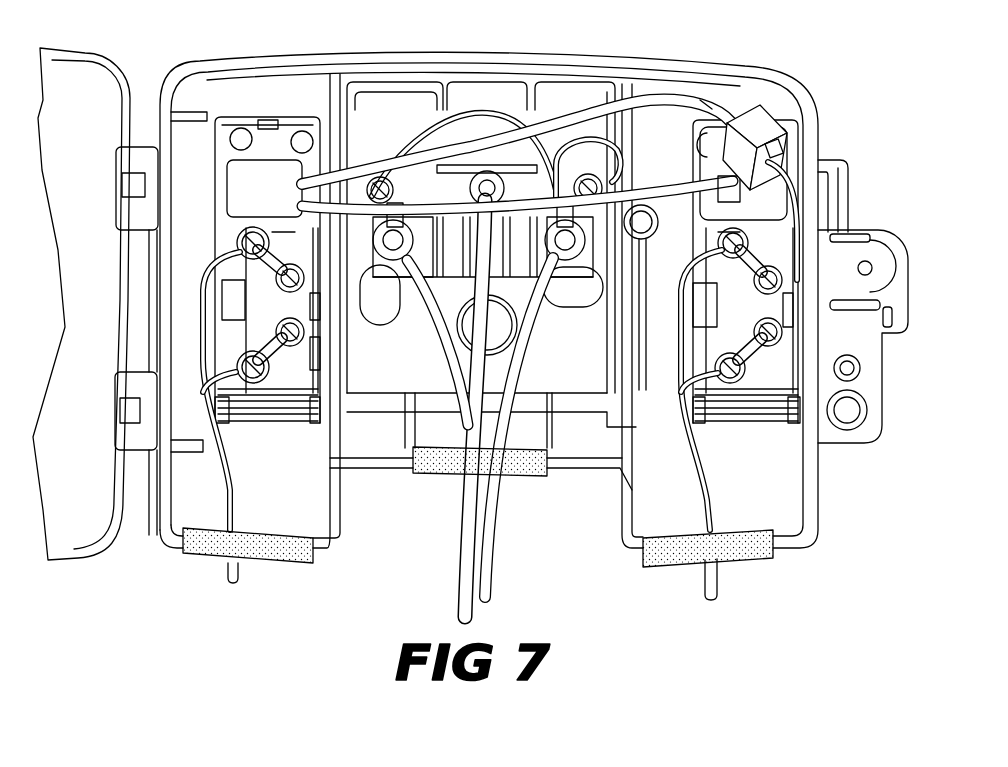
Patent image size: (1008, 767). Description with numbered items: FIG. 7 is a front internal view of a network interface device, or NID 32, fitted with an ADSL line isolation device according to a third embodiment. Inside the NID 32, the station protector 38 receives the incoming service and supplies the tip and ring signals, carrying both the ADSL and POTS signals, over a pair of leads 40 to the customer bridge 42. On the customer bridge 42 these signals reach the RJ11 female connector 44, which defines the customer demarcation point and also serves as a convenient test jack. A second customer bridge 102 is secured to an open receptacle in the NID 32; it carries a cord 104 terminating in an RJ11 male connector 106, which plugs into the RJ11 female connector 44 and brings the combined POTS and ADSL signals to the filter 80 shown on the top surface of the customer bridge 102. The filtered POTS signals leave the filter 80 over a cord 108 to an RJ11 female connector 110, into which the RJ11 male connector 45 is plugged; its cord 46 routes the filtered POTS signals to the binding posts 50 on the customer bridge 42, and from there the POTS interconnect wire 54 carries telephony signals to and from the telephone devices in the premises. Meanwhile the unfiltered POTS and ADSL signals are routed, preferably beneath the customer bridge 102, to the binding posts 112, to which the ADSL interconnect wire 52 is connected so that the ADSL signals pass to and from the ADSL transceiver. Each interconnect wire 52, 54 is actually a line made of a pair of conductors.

The NID 32 is at (330, 54).
The station protector 38 is at (582, 290).
The leads 40 is at (493, 111).
The customer bridge 42 is at (793, 127).
The RJ11 female connector 44 is at (717, 170).
The RJ11 male connector 45 is at (785, 158).
The cord 46 is at (818, 186).
The binding posts 50 is at (718, 250).
The ADSL interconnect wire 52 is at (240, 570).
The POTS interconnect wire 54 is at (719, 580).
The filter 80 is at (277, 168).
The customer bridge 102 is at (230, 126).
The cord 104 is at (430, 207).
The RJ11 male connector 106 is at (731, 202).
The cord 108 is at (683, 105).
The RJ11 female connector 110 is at (757, 120).
The binding posts 112 is at (238, 233).